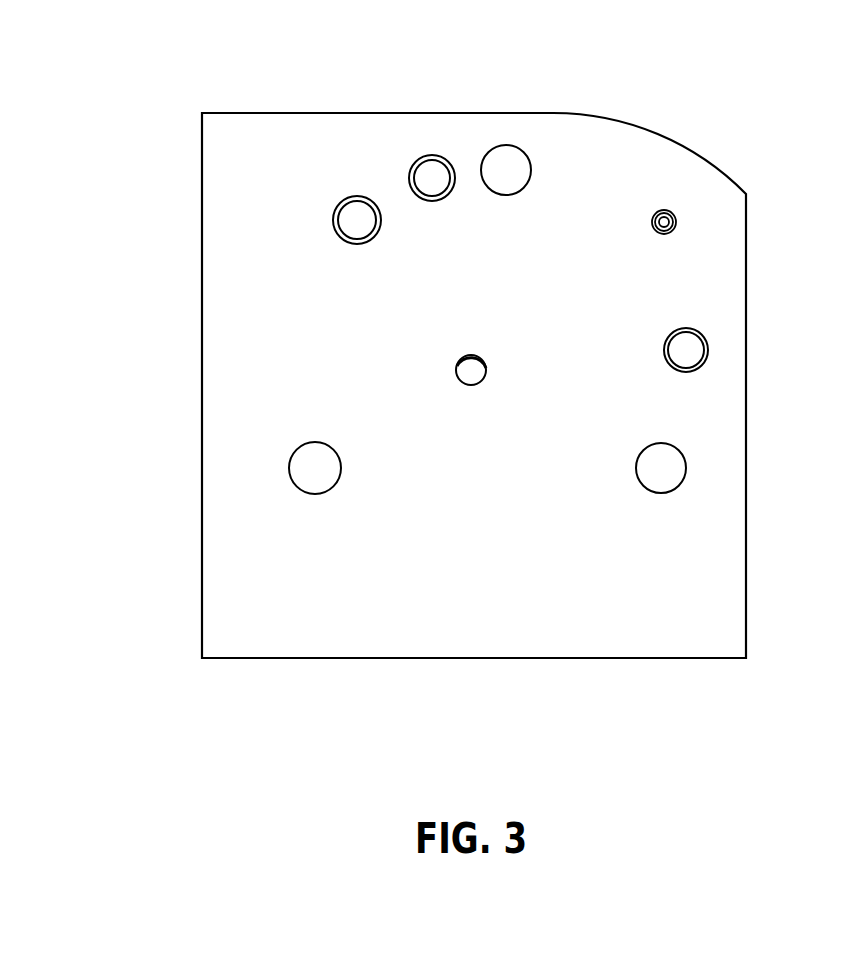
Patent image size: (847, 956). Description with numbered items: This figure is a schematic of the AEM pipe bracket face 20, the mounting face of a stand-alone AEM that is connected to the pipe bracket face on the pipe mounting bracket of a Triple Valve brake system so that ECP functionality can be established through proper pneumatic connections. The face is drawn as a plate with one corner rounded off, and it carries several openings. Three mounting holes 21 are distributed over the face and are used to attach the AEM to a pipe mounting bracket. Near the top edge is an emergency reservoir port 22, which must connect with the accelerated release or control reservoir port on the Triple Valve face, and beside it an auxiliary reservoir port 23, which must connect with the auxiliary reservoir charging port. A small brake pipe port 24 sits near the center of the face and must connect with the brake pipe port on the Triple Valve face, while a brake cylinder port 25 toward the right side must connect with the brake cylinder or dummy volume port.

The AEM pipe bracket face 20 is at (608, 80).
The mounting holes 21 is at (506, 145).
The emergency reservoir port 22 is at (432, 155).
The auxiliary reservoir port 23 is at (348, 216).
The brake pipe port 24 is at (464, 386).
The brake cylinder port 25 is at (679, 326).